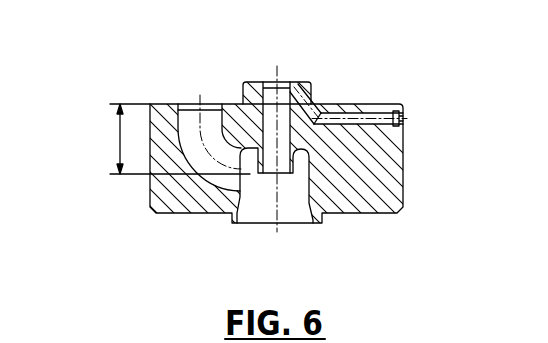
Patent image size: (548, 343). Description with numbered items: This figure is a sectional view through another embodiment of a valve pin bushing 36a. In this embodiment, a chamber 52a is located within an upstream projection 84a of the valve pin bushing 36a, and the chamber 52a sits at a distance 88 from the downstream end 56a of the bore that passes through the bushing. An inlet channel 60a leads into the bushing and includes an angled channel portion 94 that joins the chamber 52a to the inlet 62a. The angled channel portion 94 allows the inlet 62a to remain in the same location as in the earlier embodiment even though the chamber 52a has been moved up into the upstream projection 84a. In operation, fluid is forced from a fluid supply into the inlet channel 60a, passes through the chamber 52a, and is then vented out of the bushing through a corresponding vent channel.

The valve pin bushing 36a is at (412, 157).
The chamber 52a is at (266, 87).
The downstream end 56a is at (278, 185).
The inlet channel 60a is at (355, 115).
The inlet 62a is at (403, 119).
The upstream projection 84a is at (302, 88).
The distance 88 is at (117, 150).
The angled channel portion 94 is at (313, 123).